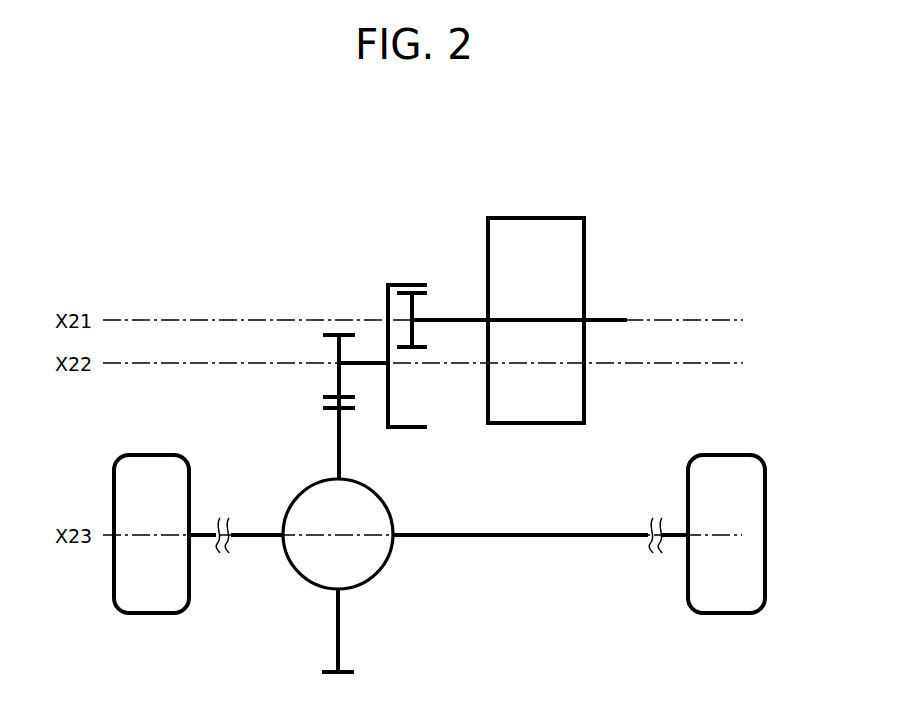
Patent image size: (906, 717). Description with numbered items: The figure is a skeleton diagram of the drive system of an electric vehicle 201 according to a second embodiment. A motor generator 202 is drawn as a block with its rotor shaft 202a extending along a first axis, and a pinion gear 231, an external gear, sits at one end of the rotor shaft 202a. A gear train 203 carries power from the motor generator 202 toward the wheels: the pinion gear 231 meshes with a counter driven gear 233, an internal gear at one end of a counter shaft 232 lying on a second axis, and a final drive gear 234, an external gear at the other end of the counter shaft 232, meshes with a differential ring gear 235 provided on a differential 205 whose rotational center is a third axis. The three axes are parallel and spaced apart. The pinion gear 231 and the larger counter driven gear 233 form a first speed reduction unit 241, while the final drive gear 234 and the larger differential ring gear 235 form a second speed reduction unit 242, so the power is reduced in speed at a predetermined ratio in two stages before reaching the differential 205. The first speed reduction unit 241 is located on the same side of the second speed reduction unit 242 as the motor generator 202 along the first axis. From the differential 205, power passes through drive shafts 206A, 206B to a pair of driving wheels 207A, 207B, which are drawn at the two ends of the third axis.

The electric vehicle 201 is at (523, 166).
The motor generator 202 is at (586, 250).
The rotor shaft 202a is at (434, 322).
The gear train 203 is at (349, 252).
The pinion gear 231 is at (427, 293).
The counter shaft 232 is at (375, 362).
The counter driven gear 233 is at (406, 286).
The final drive gear 234 is at (330, 333).
The differential ring gear 235 is at (335, 436).
The first speed reduction unit 241 is at (424, 257).
The second speed reduction unit 242 is at (316, 392).
The differential 205 is at (298, 496).
The drive shaft 206A is at (567, 538).
The drive shaft 206B is at (246, 541).
The driving wheel 207A is at (725, 615).
The driving wheel 207B is at (135, 615).